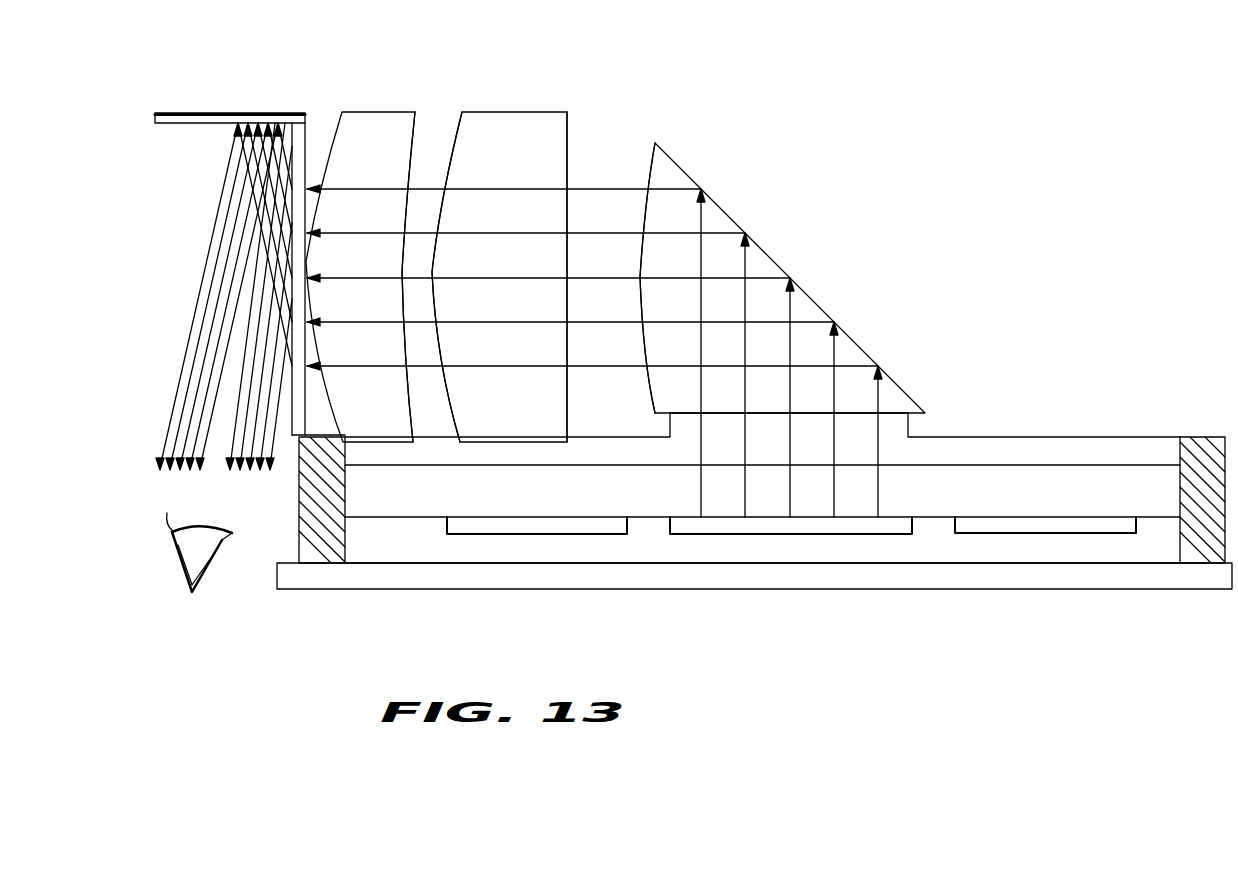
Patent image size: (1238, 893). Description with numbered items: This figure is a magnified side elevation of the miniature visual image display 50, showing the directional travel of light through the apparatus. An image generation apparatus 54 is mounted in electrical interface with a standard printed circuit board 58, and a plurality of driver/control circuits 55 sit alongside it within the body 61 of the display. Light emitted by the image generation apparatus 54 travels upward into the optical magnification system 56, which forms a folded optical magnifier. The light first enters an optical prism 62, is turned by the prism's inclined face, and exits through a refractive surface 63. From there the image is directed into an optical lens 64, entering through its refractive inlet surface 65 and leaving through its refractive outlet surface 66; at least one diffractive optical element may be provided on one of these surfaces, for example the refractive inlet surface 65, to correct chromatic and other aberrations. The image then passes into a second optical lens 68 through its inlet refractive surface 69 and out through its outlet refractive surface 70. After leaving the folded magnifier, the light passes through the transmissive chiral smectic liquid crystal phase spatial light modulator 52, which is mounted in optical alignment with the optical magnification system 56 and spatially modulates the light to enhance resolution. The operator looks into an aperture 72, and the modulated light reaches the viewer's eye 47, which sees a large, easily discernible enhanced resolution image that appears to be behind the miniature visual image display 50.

The eye 47 is at (168, 572).
The miniature visual image display 50 is at (770, 679).
The transmissive chiral smectic liquid crystal phase spatial light modulator 52 is at (243, 90).
The image generation apparatus 54 is at (895, 523).
The driver/control circuits 55 is at (468, 535).
The optical magnification system 56 is at (780, 144).
The printed circuit board 58 is at (987, 580).
The housing 61 is at (553, 506).
The optical prism 62 is at (803, 307).
The refractive surface 63 is at (645, 153).
The optical lens 64 is at (528, 420).
The refractive inlet surface 65 is at (568, 135).
The refractive outlet surface 66 is at (449, 132).
The optical lens 68 is at (385, 420).
The inlet refractive surface 69 is at (415, 130).
The outlet refractive surface 70 is at (338, 130).
The aperture 72 is at (136, 429).